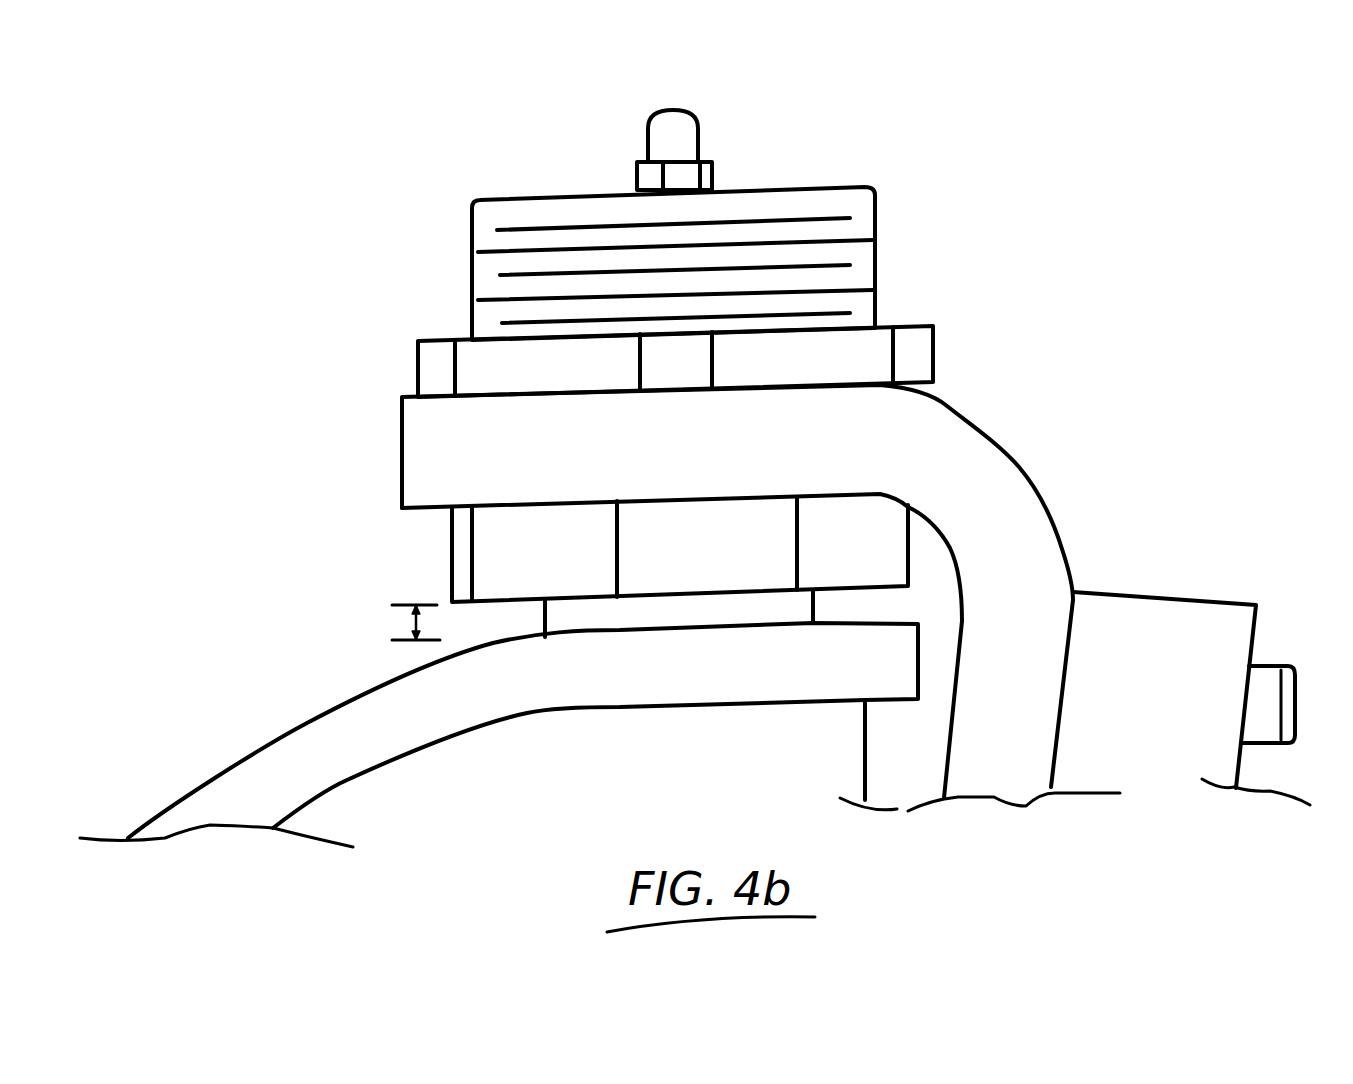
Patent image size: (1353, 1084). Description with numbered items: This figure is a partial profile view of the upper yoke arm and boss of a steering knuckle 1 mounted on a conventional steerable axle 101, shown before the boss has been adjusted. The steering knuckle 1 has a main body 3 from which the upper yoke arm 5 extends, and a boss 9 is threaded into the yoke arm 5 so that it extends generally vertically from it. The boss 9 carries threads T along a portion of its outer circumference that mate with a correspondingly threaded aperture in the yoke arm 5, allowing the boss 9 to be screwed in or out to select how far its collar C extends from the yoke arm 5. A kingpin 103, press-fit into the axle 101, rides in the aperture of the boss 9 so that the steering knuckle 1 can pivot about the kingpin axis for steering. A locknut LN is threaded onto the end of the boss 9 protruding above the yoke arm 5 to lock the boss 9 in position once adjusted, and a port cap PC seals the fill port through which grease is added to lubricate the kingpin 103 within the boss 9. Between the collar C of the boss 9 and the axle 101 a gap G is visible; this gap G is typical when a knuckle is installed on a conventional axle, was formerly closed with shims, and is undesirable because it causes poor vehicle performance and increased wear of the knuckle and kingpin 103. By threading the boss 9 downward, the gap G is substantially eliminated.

The steering knuckle 1 is at (1030, 310).
The port cap PC is at (677, 135).
The threads T is at (847, 237).
The locknut LN is at (867, 358).
The upper yoke arm 5 is at (727, 461).
The collar C is at (717, 557).
The boss 9 is at (500, 532).
The kingpin 103 is at (710, 622).
The main body 3 is at (1177, 681).
The steerable axle 101 is at (340, 733).
The gap G is at (410, 617).